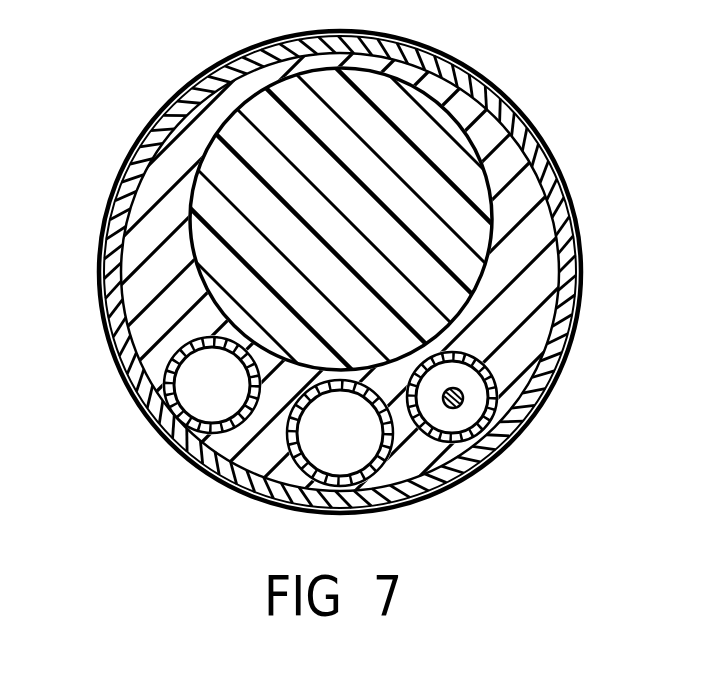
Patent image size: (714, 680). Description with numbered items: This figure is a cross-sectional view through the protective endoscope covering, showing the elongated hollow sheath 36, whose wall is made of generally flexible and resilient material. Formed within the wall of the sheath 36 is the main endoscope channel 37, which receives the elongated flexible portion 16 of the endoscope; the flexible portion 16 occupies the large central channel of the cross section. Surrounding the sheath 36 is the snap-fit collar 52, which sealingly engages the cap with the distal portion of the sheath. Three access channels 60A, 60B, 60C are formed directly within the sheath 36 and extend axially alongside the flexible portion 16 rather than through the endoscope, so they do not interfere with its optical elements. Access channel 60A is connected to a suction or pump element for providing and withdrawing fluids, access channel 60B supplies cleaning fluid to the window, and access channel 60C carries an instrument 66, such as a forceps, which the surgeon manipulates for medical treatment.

The elongated flexible portion 16 is at (252, 143).
The endoscope channel 37 is at (193, 88).
The snap-fit collar 52 is at (517, 113).
The sheath portion 36 is at (523, 187).
The access channel 60A is at (195, 403).
The access channel 60B is at (352, 467).
The access channel 60C is at (452, 443).
The instrument 66 is at (462, 393).